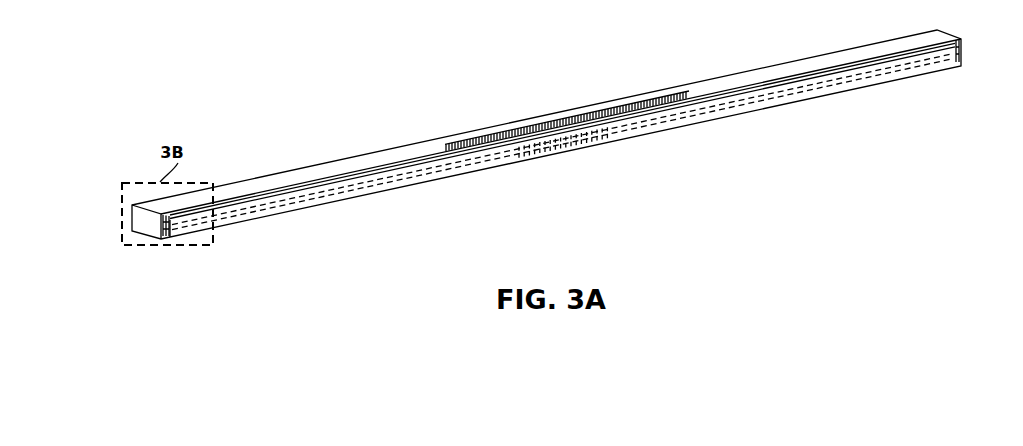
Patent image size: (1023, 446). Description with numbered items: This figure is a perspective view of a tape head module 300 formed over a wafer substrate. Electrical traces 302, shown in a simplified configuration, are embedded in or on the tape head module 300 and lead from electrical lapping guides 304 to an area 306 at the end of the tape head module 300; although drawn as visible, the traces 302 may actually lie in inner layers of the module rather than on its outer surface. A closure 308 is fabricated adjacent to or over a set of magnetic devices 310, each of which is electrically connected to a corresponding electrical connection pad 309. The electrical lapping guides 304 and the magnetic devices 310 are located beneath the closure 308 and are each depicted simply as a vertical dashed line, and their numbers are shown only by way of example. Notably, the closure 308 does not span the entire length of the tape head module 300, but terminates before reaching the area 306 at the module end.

The tape head module 300 is at (833, 53).
The electrical traces 302 is at (258, 214).
The electrical lapping guides 304 is at (432, 182).
The area at the end of the tape head module 306 is at (170, 243).
The closure 308 is at (323, 207).
The electrical connection pad 309 is at (689, 103).
The magnetic devices 310 is at (518, 160).